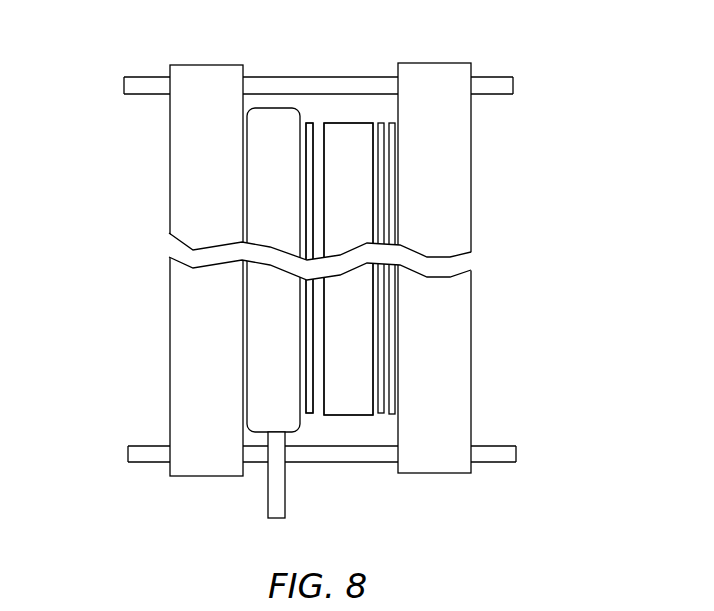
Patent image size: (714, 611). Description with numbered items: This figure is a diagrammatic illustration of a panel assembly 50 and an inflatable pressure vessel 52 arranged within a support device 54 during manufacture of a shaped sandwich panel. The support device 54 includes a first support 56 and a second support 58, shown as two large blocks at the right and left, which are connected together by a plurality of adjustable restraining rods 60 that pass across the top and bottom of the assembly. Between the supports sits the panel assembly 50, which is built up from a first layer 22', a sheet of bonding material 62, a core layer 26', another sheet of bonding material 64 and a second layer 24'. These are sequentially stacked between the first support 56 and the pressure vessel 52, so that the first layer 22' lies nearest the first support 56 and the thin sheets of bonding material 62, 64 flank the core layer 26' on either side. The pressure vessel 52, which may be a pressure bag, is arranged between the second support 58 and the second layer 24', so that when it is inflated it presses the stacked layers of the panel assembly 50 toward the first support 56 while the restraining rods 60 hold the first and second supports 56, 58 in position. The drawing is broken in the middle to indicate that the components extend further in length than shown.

The panel assembly 50 is at (341, 100).
The inflatable pressure vessel 52 is at (272, 107).
The support device 54 is at (536, 60).
The first support 56 is at (472, 345).
The second support 58 is at (170, 363).
The adjustable restraining rod 60 is at (123, 85).
The sheet of bonding material 62 is at (380, 122).
The sheet of bonding material 64 is at (312, 122).
The first layer 22' is at (390, 335).
The second layer 24' is at (313, 328).
The core layer 26' is at (348, 319).